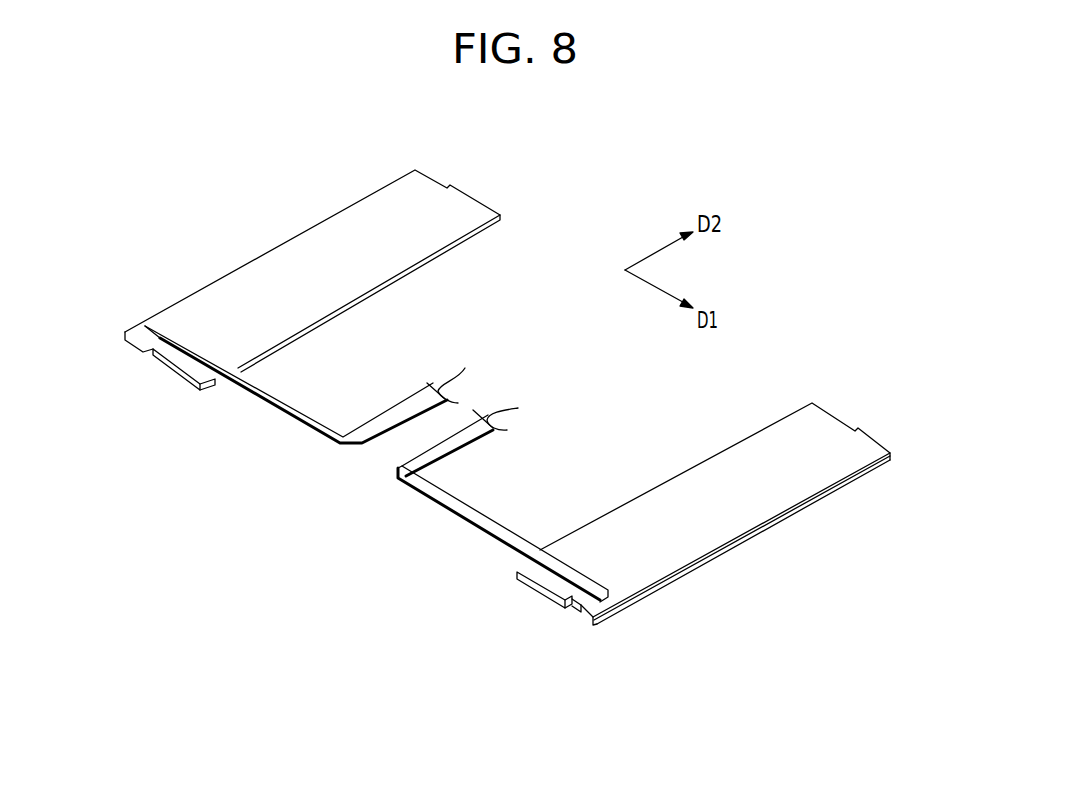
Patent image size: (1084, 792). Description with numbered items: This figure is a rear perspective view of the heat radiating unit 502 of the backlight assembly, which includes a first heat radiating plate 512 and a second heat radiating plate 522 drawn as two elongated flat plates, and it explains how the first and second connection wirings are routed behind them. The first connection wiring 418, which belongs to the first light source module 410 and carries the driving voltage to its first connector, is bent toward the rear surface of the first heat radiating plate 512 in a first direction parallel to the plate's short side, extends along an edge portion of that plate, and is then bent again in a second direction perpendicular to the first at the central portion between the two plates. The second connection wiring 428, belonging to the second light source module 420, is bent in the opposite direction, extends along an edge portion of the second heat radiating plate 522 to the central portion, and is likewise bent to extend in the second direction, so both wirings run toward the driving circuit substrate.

The first light source module 410 is at (753, 542).
The first connection wiring 418 is at (506, 405).
The second light source module 420 is at (145, 345).
The second connection wiring 428 is at (456, 372).
The heat radiating unit 502 is at (327, 601).
The first heat radiating plate 512 is at (531, 568).
The second heat radiating plate 522 is at (192, 362).